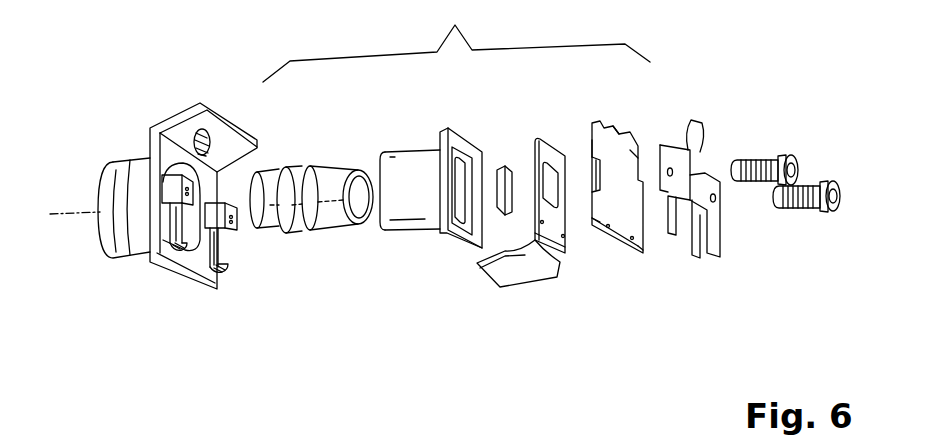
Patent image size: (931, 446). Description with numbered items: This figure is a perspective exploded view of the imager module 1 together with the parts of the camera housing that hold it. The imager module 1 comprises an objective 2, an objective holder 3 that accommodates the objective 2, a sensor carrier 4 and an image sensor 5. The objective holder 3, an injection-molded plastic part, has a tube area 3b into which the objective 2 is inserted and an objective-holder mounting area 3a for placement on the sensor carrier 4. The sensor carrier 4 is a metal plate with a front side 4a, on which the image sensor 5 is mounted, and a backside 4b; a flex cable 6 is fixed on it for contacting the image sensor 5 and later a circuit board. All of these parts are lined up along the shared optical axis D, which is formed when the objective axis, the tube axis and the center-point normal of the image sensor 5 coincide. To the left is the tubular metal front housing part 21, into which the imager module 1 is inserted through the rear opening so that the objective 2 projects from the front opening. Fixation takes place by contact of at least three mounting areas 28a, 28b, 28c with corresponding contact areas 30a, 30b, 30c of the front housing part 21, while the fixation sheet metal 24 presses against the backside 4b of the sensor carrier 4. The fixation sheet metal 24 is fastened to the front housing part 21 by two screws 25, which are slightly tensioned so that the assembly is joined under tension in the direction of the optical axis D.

The imager module 1 is at (456, 41).
The objective 2 is at (330, 168).
The objective holder 3 is at (460, 164).
The objective-holder mounting area 3a is at (460, 133).
The tube area 3b is at (408, 155).
The sensor carrier 4 is at (597, 122).
The front side 4a is at (582, 142).
The backside 4b is at (631, 156).
The image sensor 5 is at (505, 168).
The flex cable 6 is at (555, 270).
The front housing part 21 is at (176, 126).
The fixation sheet metal 24 is at (708, 250).
The screws 25 is at (757, 182).
The mounting area 28a is at (583, 223).
The mounting area 28b is at (619, 122).
The mounting area 28c is at (652, 241).
The contact area 30a is at (188, 255).
The contact area 30b is at (205, 130).
The contact area 30c is at (222, 272).
The optical axis D is at (68, 214).